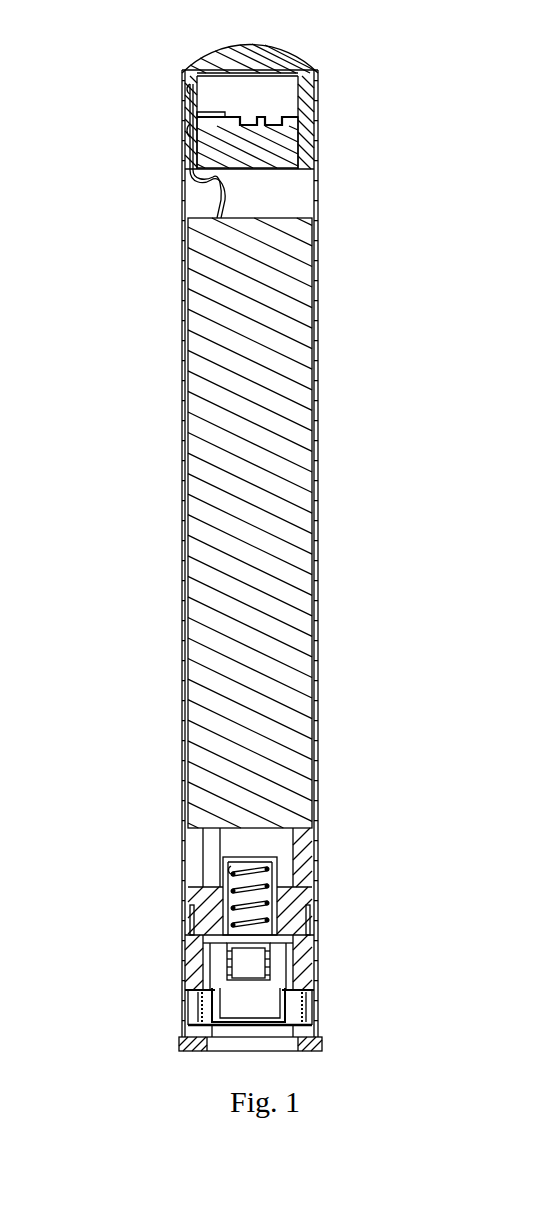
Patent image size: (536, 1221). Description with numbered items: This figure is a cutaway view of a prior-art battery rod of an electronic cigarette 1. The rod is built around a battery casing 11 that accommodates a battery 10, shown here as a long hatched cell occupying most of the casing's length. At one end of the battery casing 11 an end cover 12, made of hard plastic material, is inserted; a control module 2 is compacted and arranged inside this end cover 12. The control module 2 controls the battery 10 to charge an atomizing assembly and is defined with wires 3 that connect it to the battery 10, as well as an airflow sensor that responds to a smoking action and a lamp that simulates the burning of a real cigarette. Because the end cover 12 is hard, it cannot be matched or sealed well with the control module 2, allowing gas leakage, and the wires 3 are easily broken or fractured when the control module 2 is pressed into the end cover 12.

The electronic cigarette 1 is at (155, 547).
The control module 2 is at (276, 154).
The wires 3 is at (185, 139).
The battery 10 is at (301, 590).
The battery casing 11 is at (318, 690).
The end cover 12 is at (307, 70).